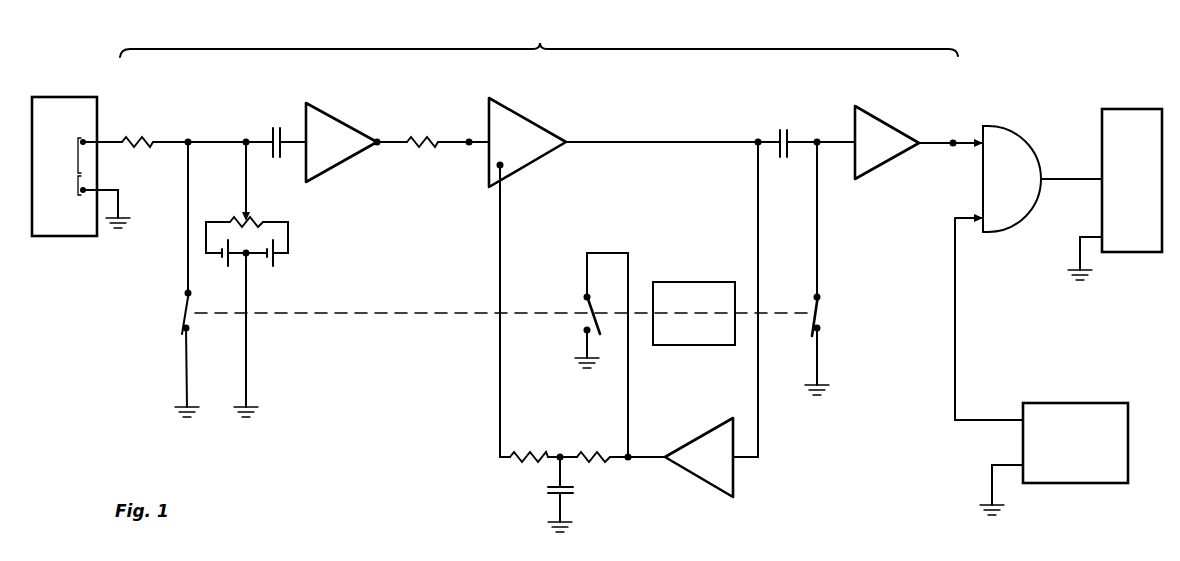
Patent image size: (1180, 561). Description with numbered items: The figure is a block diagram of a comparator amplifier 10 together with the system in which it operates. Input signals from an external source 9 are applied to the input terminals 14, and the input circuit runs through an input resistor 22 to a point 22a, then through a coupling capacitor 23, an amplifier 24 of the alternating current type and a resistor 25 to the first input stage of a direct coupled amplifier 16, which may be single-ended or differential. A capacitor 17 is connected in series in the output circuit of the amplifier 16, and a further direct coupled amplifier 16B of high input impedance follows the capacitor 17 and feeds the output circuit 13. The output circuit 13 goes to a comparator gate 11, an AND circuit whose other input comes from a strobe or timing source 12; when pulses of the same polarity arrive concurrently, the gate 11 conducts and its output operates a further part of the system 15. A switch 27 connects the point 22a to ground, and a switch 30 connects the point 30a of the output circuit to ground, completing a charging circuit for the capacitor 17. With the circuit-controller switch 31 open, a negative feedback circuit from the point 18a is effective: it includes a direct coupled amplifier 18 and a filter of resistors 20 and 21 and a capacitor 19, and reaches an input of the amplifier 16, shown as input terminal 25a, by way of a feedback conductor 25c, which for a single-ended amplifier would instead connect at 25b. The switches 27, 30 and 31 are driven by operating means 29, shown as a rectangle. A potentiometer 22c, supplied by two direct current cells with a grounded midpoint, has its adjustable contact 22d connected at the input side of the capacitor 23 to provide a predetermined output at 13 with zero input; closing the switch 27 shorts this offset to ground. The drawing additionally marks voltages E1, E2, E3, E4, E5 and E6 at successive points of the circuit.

The comparator amplifier 10 is at (539, 37).
The external source 9 is at (75, 227).
The input terminals 14 is at (80, 172).
The input voltage E1 is at (88, 176).
The input resistor 22 is at (135, 138).
The point of the input circuit 22a is at (189, 140).
The voltage at junction E2 is at (190, 144).
The coupling capacitor 23 is at (276, 128).
The amplifier of the alternating current type 24 is at (325, 130).
The amplifier output voltage E3 is at (377, 146).
The resistor 25 is at (421, 125).
The feedback connection point 25b is at (469, 140).
The direct coupled amplifier 16 is at (518, 130).
The input terminal 25a is at (498, 166).
The point of the output circuit 18a is at (756, 141).
The voltage at junction E5 is at (755, 145).
The capacitor 17 is at (780, 158).
The point of the output circuit 30a is at (817, 140).
The further amplifier 16B is at (877, 160).
The output circuit 13 is at (952, 141).
The output voltage E6 is at (953, 146).
The comparator gate 11 is at (1020, 155).
The further part of the system 15 is at (1135, 132).
The strobe or timing source 12 is at (1080, 425).
The adjustable contact 22d is at (251, 211).
The potentiometer 22c is at (288, 237).
The switch 27 is at (183, 313).
The feedback conductor 25c is at (498, 398).
The resistor 21 is at (517, 462).
The capacitor 19 is at (575, 491).
The resistor 20 is at (597, 450).
The feedback voltage E4 is at (641, 477).
The circuit-controller switch 31 is at (585, 315).
The operating means 29 is at (677, 347).
The direct coupled amplifier 18 is at (716, 476).
The switch 30 is at (822, 312).